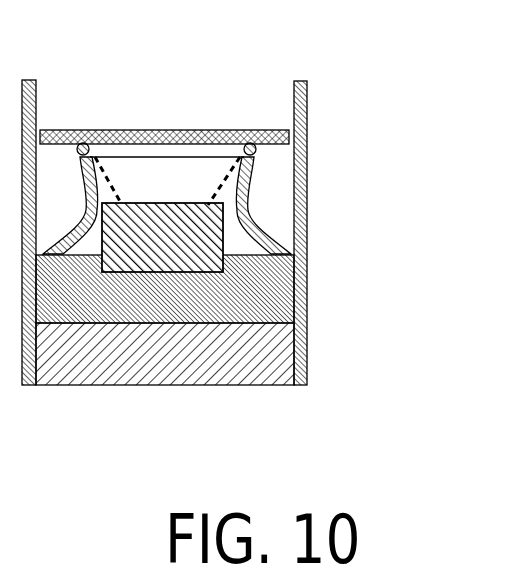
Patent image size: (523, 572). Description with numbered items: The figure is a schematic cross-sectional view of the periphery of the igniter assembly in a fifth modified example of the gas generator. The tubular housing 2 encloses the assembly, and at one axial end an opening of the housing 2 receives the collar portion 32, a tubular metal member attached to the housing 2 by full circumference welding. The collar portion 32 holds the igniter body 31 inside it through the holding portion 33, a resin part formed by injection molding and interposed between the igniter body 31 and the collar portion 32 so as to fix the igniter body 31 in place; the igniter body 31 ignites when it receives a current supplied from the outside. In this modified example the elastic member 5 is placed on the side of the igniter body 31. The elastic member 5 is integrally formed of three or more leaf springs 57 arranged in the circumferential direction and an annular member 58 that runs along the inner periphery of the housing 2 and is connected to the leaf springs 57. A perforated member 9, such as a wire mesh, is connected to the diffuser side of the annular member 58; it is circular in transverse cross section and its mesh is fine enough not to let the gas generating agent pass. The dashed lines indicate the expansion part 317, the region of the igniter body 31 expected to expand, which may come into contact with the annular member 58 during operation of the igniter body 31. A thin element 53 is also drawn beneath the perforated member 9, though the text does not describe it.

The housing 2 is at (307, 373).
The elastic member 5 is at (268, 169).
The perforated member 9 is at (237, 130).
The igniter body 31 is at (223, 222).
The collar portion 32 is at (220, 358).
The holding portion 33 is at (220, 300).
The thin film 53 is at (100, 158).
The leaf springs 57 is at (252, 177).
The annular member 58 is at (256, 150).
The expansion part 317 is at (207, 190).